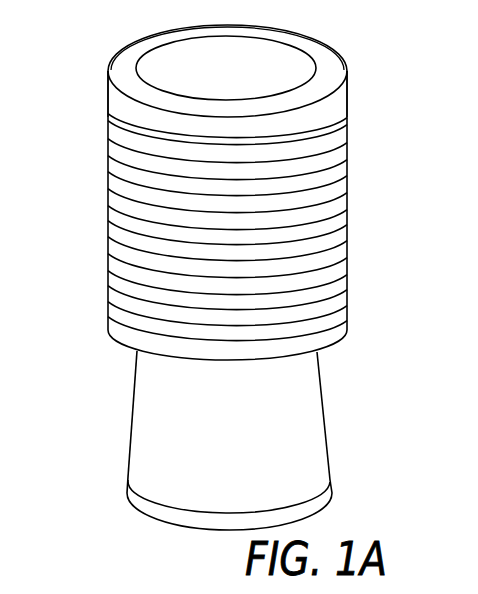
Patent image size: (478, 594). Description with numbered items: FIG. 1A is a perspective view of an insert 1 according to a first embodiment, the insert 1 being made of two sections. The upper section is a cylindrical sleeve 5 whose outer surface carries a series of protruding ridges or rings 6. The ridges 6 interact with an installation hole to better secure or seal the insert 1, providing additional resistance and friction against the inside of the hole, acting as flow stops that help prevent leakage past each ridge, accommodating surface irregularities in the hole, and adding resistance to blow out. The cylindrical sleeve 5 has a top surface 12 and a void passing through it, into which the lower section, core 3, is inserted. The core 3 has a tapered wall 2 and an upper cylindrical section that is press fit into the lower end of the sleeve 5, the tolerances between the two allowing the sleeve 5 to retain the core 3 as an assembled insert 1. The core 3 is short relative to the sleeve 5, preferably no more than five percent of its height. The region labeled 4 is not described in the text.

The insert 1 is at (88, 137).
The tapered wall 2 is at (323, 420).
The core 3 is at (127, 395).
The upper land 4 is at (340, 98).
The cylindrical sleeve 5 is at (330, 40).
The ridges 6 is at (108, 192).
The top surface 12 is at (130, 57).